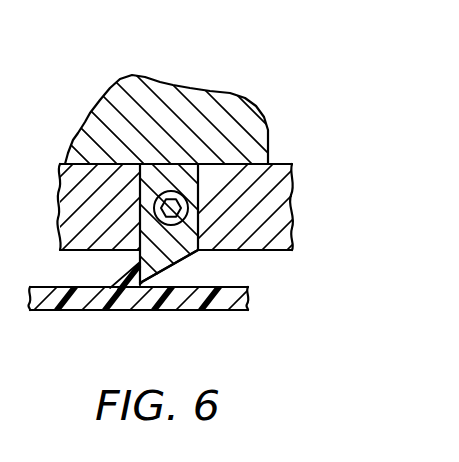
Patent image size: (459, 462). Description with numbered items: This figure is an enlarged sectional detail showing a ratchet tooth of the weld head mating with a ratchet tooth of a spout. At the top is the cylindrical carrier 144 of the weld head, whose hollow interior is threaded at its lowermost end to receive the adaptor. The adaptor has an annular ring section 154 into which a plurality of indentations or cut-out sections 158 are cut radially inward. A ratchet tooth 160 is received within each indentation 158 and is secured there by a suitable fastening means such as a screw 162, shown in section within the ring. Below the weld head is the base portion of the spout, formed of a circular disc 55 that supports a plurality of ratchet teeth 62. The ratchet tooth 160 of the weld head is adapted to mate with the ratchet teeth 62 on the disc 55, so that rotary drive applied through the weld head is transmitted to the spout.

The cylindrical carrier 144 is at (210, 93).
The annular ring section 154 is at (292, 220).
The indentation or cut-out section 158 is at (202, 178).
The screw 162 is at (174, 211).
The ratchet tooth 160 is at (162, 270).
The circular disc 55 is at (134, 318).
The ratchet tooth 62 is at (114, 280).